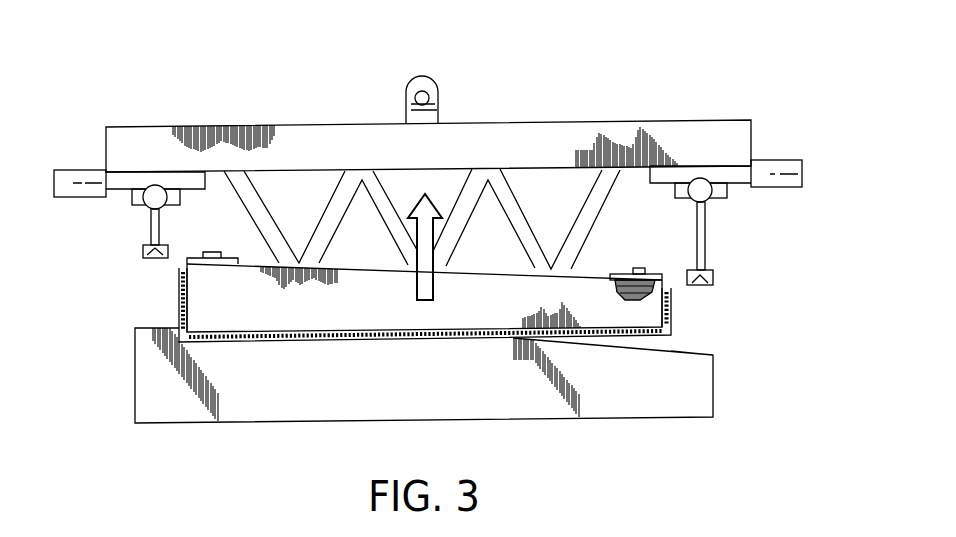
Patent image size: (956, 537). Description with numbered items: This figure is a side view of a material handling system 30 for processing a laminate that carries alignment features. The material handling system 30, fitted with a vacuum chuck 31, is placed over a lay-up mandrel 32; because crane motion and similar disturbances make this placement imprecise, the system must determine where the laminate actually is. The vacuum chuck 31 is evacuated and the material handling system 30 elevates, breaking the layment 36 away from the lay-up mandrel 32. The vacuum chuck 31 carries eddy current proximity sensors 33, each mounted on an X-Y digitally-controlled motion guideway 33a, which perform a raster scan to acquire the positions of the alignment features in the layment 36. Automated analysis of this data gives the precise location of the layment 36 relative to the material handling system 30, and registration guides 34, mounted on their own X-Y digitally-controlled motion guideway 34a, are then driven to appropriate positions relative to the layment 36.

The material handling system 30 is at (535, 135).
The vacuum chuck 31 is at (357, 283).
The lay-up mandrel 32 is at (157, 367).
The eddy current proximity sensor 33 is at (657, 294).
The X-Y digitally-controlled motion guideway 33a is at (637, 268).
The registration guide 34 is at (726, 275).
The X-Y digitally-controlled motion guideway 34a is at (700, 188).
The layment 36 is at (168, 285).